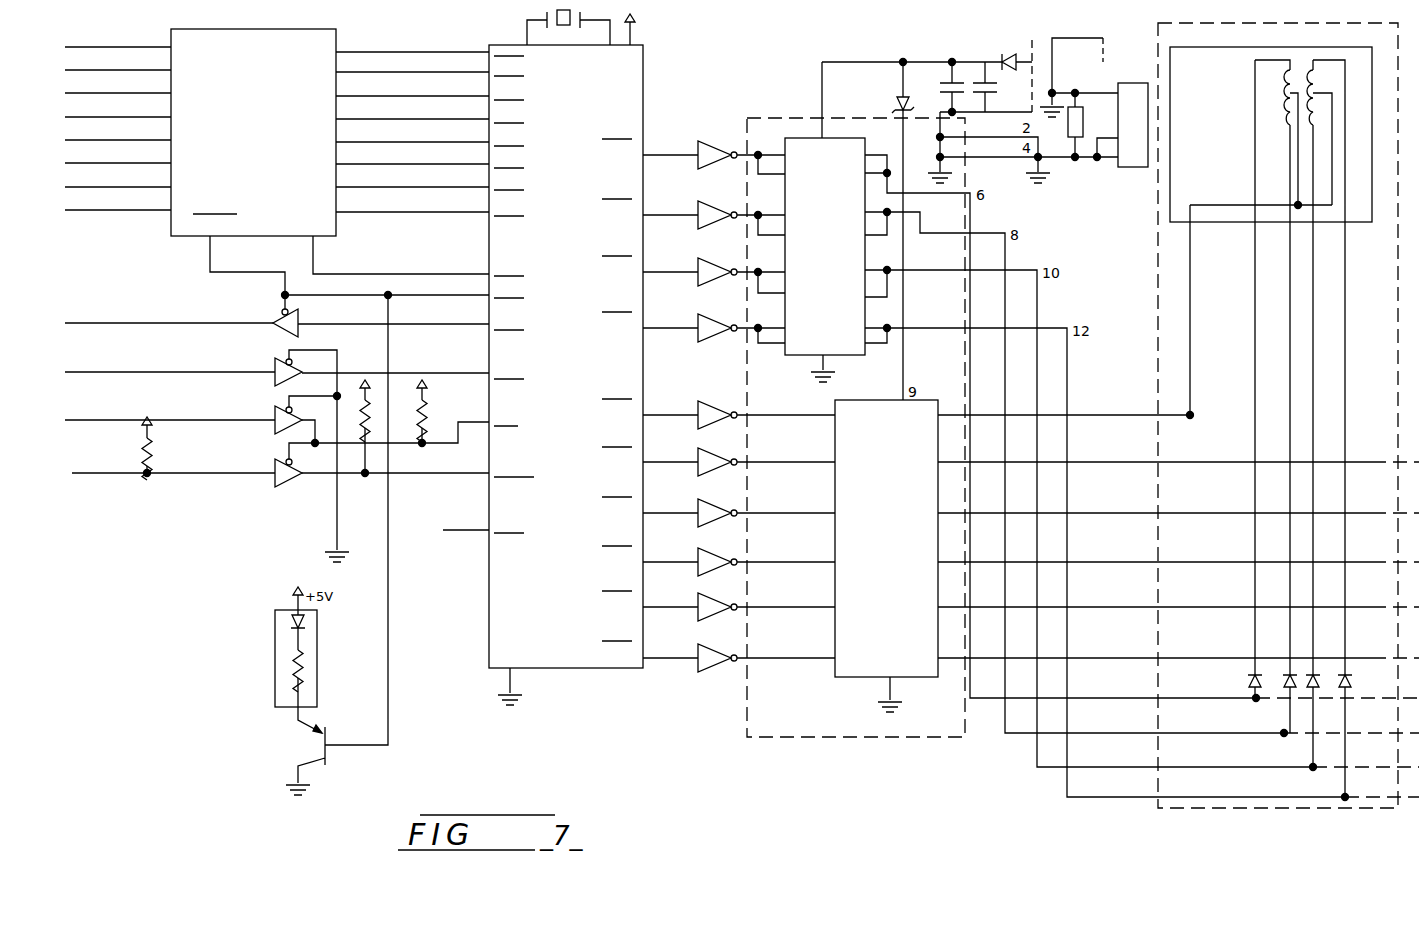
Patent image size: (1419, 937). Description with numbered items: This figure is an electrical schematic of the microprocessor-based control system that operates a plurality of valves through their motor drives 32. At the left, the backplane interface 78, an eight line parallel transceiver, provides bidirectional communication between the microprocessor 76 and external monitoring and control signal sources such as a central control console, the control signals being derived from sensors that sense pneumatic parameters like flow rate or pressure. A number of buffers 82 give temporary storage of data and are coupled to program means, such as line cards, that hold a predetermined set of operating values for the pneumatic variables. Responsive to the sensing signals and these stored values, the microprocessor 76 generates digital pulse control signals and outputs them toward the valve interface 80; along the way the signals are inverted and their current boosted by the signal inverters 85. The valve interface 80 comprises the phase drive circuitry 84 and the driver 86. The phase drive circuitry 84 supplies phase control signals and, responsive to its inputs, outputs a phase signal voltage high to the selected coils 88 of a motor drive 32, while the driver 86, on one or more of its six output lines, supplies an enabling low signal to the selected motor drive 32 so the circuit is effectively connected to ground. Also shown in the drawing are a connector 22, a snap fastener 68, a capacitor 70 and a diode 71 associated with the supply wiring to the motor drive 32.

The backplane interface 78 is at (330, 40).
The microprocessor 76 is at (570, 652).
The buffers 82 is at (273, 425).
The signal inverters 85 is at (718, 672).
The phase drive circuitry 84 is at (810, 139).
The driver 86 is at (860, 666).
The valve interface 80 is at (756, 738).
The coils 88 is at (1275, 99).
The motor drive 32 is at (1172, 811).
The connector 22 is at (1120, 116).
The snap fastener 68 is at (1077, 57).
The filter capacitor 70 is at (986, 89).
The diode 71 is at (1016, 74).